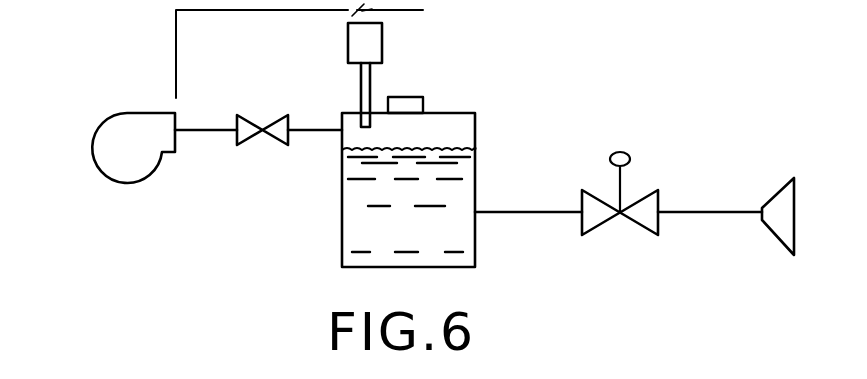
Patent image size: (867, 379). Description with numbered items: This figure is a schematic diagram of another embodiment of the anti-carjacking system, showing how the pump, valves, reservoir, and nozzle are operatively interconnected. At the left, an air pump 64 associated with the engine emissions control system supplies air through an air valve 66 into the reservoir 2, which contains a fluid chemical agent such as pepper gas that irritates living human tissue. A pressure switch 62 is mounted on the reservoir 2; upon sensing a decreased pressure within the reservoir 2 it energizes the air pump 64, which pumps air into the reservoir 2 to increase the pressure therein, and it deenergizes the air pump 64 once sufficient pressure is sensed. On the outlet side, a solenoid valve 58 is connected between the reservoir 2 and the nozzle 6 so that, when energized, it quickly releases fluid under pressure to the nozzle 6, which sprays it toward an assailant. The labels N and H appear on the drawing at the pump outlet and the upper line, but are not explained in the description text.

The reservoir 2 is at (437, 113).
The nozzle 6 is at (778, 190).
The solenoid valve 58 is at (658, 227).
The pressure switch 62 is at (347, 42).
The air pump 64 is at (91, 143).
The air valve 66 is at (278, 142).
The blower outlet level N is at (145, 113).
The height H is at (312, 49).